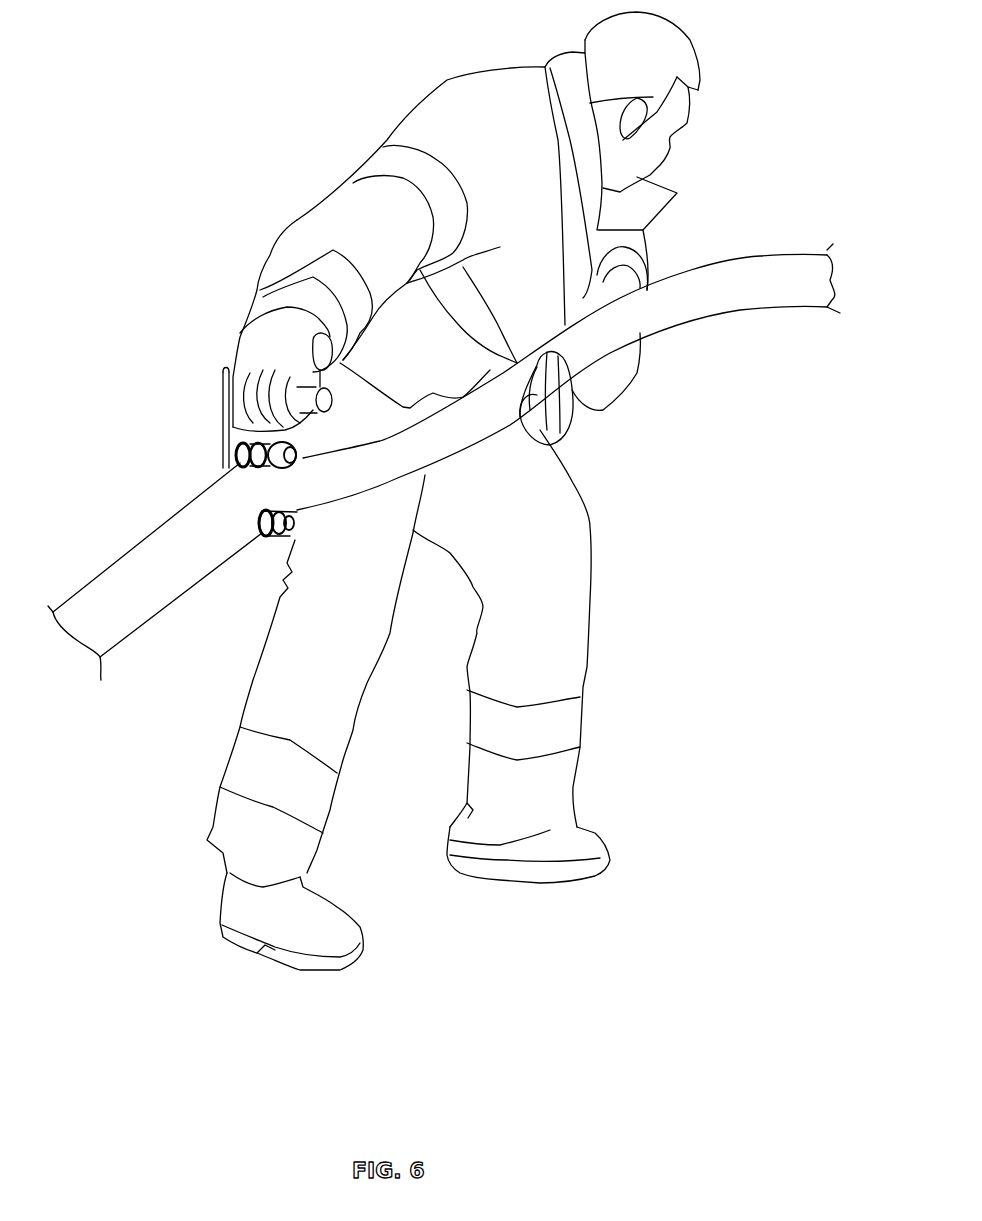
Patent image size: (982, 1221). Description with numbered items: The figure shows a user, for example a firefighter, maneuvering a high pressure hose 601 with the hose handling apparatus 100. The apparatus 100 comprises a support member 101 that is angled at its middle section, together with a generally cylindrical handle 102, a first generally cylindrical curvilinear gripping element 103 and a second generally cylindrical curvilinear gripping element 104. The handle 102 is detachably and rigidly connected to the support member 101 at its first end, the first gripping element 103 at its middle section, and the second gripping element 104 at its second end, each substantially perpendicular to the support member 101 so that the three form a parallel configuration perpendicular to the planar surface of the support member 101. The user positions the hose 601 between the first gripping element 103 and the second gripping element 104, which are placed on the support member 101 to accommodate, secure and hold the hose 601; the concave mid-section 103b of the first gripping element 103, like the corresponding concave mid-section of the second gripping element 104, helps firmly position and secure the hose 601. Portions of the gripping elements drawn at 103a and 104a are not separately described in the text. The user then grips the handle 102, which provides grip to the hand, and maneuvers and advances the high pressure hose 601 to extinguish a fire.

The hose handling apparatus 100 is at (264, 494).
The support member 101 is at (220, 397).
The generally cylindrical handle 102 is at (292, 398).
The first generally cylindrical curvilinear gripping element 103 is at (299, 532).
The coupling ring 103a is at (310, 467).
The mid-section of the first gripping element 103b is at (245, 456).
The second generally cylindrical curvilinear gripping element 104 is at (320, 617).
The second coupling ring 104a is at (296, 547).
The hose 601 is at (710, 271).